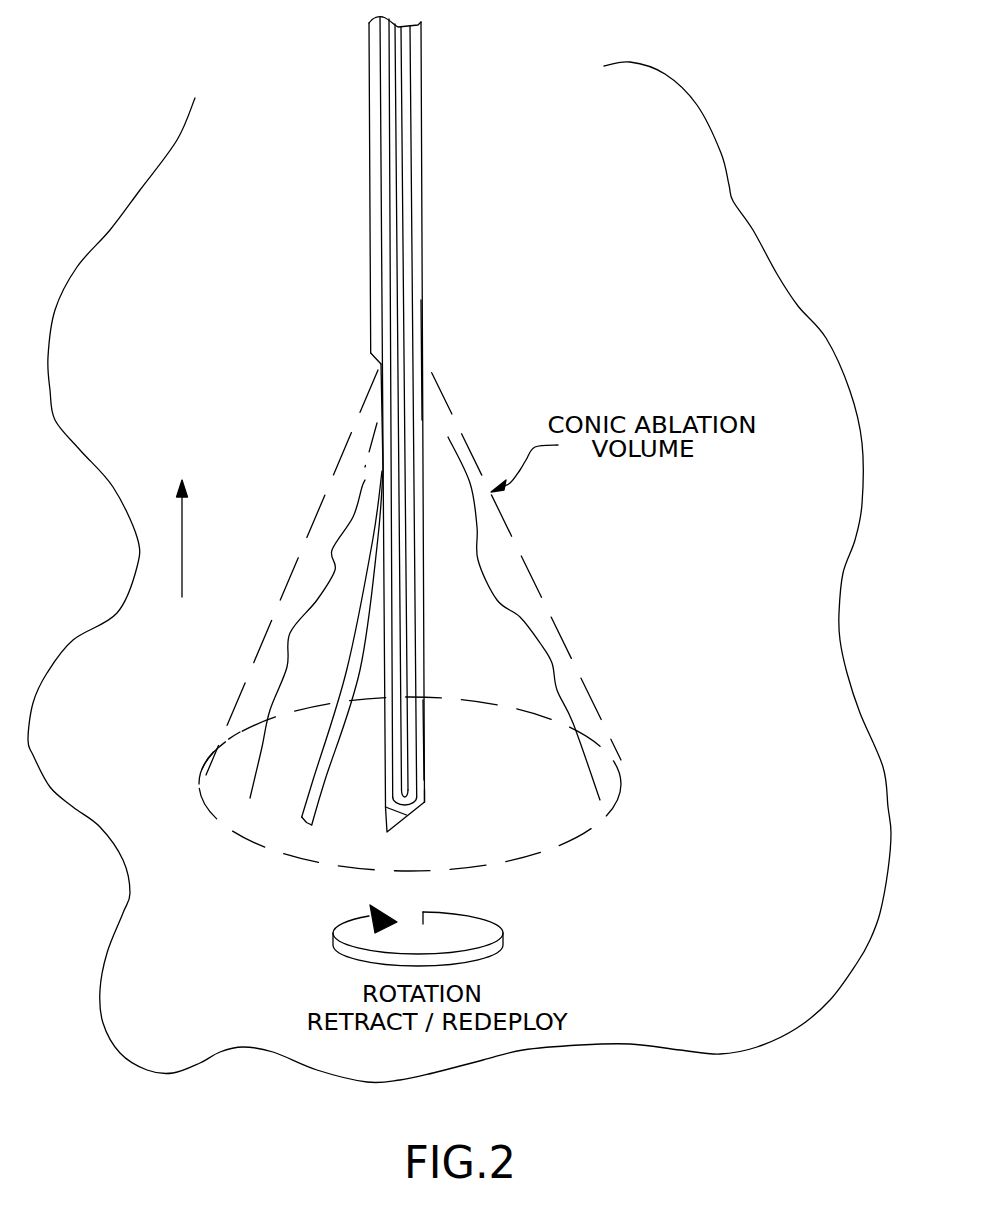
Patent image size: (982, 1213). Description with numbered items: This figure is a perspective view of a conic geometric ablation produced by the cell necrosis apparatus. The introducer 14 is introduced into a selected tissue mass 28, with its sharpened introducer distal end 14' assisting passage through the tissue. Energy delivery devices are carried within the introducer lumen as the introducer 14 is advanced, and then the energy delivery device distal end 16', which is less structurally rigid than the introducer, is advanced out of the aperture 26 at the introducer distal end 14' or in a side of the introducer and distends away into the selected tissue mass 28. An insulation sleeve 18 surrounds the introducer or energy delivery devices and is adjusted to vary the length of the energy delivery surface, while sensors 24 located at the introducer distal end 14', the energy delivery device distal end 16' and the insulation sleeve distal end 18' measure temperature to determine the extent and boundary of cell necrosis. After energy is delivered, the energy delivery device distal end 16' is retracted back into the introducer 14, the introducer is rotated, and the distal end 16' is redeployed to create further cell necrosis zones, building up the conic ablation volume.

The introducer 14 is at (360, 669).
The introducer distal end 14' is at (539, 843).
The energy delivery device distal end 16' is at (191, 758).
The insulation sleeve 18 is at (473, 424).
The insulation sleeve distal end 18' is at (492, 360).
The sensor 24 is at (378, 364).
The aperture 26 is at (377, 470).
The selected tissue mass 28 is at (751, 282).